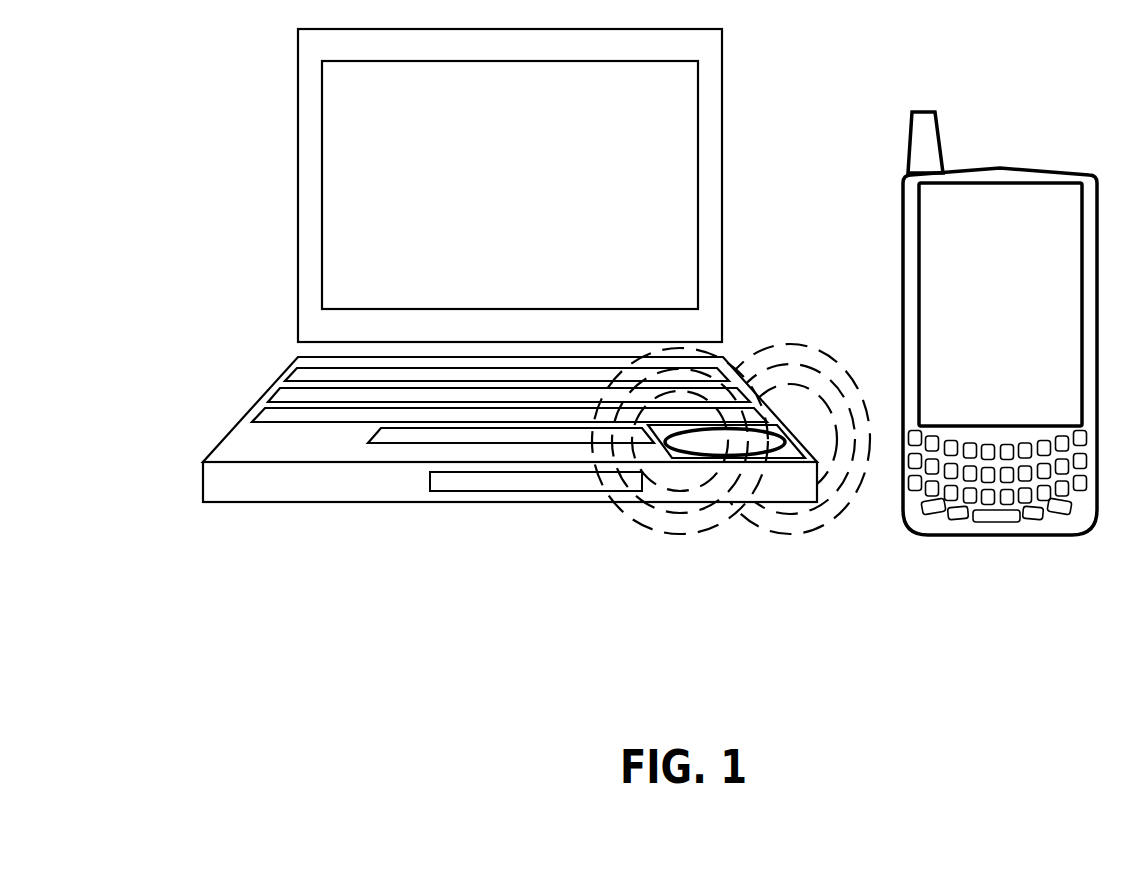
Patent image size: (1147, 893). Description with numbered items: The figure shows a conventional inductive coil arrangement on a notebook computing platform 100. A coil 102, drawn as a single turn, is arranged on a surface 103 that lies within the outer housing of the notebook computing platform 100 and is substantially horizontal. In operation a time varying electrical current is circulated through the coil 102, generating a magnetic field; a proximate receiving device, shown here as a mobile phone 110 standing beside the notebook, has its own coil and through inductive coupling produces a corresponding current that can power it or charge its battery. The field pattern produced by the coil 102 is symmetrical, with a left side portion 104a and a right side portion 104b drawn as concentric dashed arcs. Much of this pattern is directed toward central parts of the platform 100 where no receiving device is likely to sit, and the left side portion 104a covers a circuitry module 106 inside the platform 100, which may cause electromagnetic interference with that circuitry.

The notebook computing platform 100 is at (722, 48).
The coil 102 is at (764, 456).
The surface 103 is at (779, 420).
The left side portion of magnetic field pattern 104a is at (657, 562).
The right side portion of magnetic field pattern 104b is at (804, 562).
The circuitry module 106 is at (461, 491).
The mobile phone 110 is at (1087, 172).